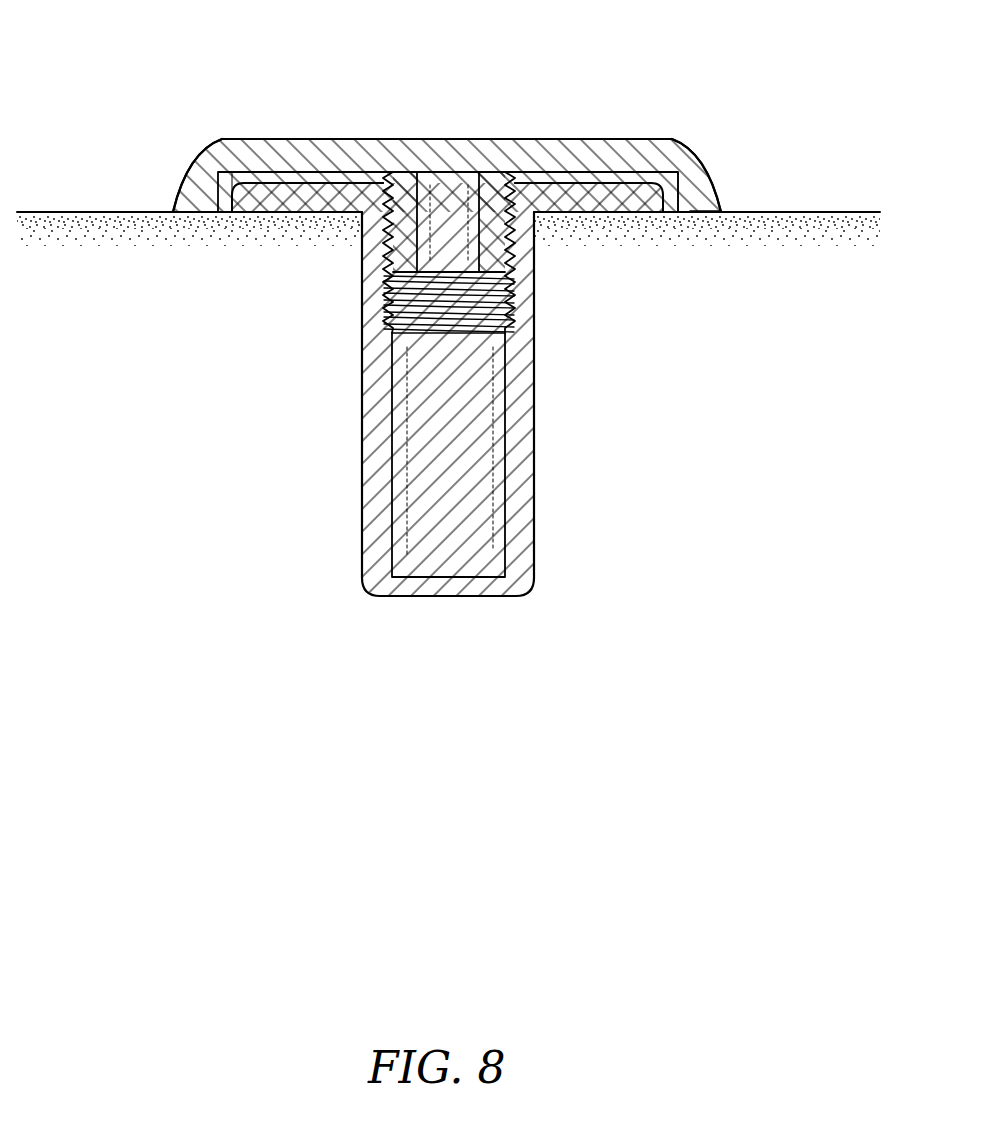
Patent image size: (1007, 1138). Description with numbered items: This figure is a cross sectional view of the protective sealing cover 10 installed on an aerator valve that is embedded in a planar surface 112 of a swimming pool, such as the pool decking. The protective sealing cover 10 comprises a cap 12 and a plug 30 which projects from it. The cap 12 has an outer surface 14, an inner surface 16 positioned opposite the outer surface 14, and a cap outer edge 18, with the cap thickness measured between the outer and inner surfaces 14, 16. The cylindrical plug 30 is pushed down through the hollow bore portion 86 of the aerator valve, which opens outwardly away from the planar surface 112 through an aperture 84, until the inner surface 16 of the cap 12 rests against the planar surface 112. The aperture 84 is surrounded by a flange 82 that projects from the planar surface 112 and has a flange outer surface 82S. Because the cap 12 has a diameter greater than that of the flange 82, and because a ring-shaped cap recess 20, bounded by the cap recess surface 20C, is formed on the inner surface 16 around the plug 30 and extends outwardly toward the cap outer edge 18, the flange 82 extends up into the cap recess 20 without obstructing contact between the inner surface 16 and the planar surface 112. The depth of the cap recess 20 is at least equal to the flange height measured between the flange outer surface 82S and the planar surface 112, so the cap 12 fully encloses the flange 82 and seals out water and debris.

The protective sealing cover 10 is at (730, 124).
The cap 12 is at (457, 165).
The outer surface 14 is at (492, 138).
The inner surface 16 is at (703, 212).
The cap outer edge 18 is at (175, 210).
The cap recess 20 is at (680, 186).
The cap recess surface 20C is at (596, 170).
The plug 30 is at (492, 248).
The flange 82 is at (446, 334).
The flange outer surface 82S is at (322, 182).
The aperture 84 is at (508, 190).
The bore portion 86 is at (473, 497).
The planar surface 112 is at (125, 211).